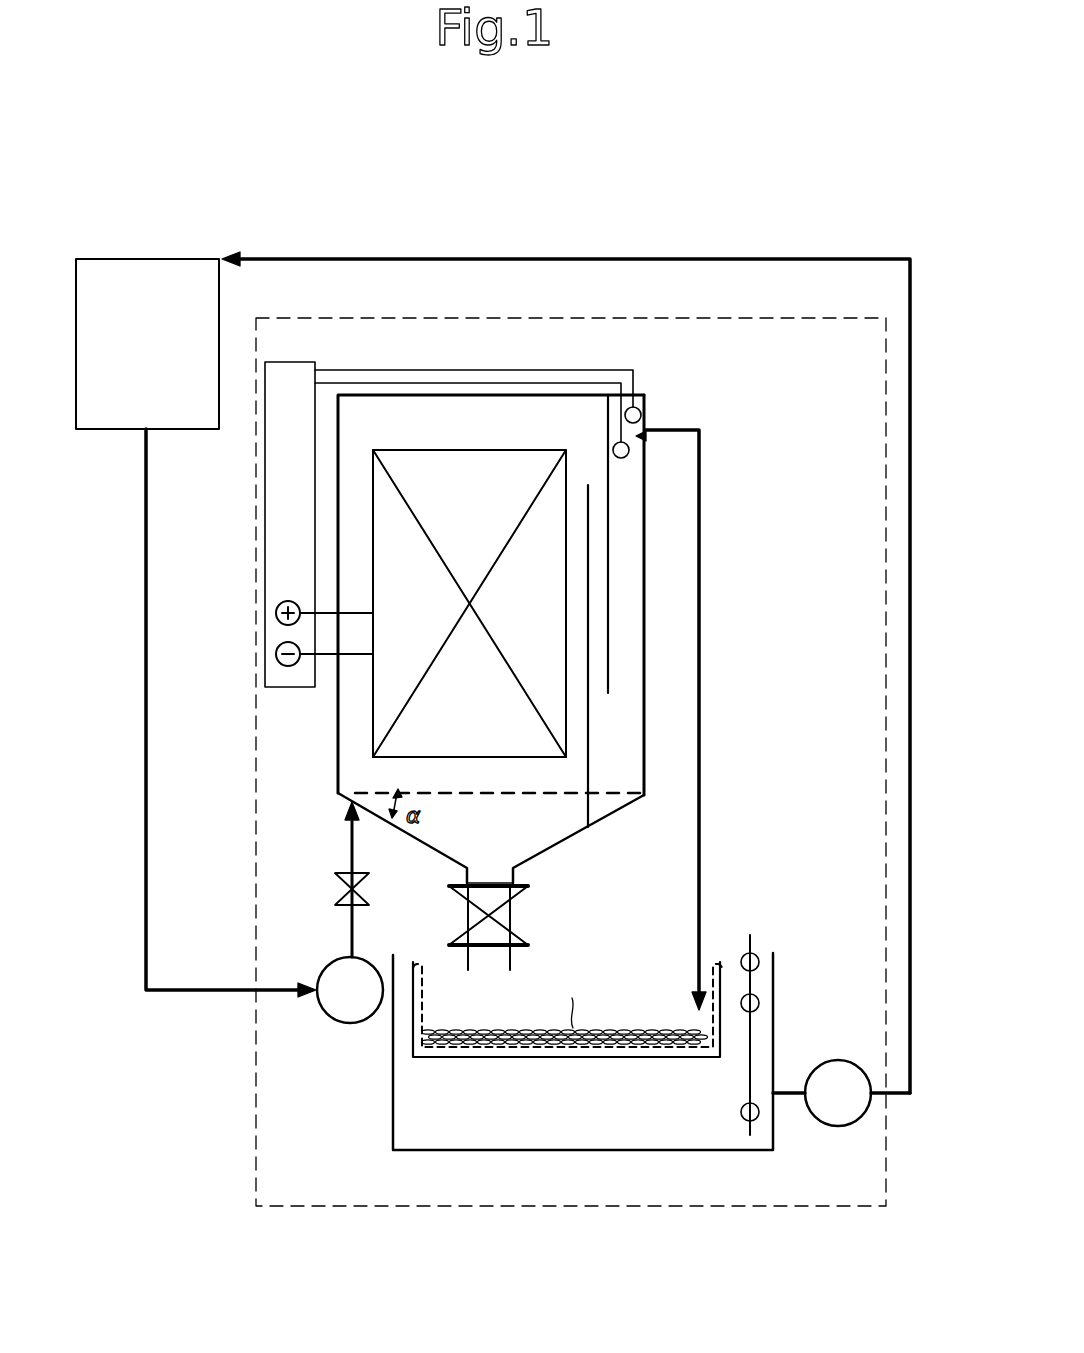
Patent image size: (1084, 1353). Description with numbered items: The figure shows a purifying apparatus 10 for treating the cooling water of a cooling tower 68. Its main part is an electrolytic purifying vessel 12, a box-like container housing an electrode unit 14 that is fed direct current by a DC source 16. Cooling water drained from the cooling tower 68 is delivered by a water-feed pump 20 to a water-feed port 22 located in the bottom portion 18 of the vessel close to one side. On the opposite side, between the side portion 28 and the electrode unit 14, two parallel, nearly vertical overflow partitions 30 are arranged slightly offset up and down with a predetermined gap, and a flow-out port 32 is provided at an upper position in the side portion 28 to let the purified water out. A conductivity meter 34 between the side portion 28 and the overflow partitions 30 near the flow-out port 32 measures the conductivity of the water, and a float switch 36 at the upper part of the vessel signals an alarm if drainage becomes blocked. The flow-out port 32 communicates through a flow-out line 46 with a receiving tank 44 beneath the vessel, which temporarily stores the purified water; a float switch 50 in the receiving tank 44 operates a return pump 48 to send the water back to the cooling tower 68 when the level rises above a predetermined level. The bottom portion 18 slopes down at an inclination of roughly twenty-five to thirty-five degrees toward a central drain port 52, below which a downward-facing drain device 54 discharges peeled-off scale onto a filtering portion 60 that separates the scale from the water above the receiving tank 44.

The purifying apparatus 10 is at (668, 318).
The electrolytic purifying vessel 12 is at (338, 738).
The electrode unit 14 is at (458, 450).
The DC source 16 is at (265, 628).
The bottom portion 18 is at (557, 847).
The water-feed pump 20 is at (340, 1023).
The water-feed port 22 is at (350, 803).
The side portion 28 is at (644, 663).
The overflow partitions 30 is at (588, 593).
The flow-out port 32 is at (650, 437).
The conductivity meter 34 is at (629, 456).
The float switch 36 is at (642, 413).
The receiving tank 44 is at (555, 1150).
The flow-out line 46 is at (699, 785).
The return pump 48 is at (838, 1126).
The float switch 50 is at (752, 1040).
The drain port 52 is at (492, 870).
The drain device 54 is at (530, 918).
The filtering portion 60 is at (528, 1048).
The cooling tower 68 is at (168, 259).